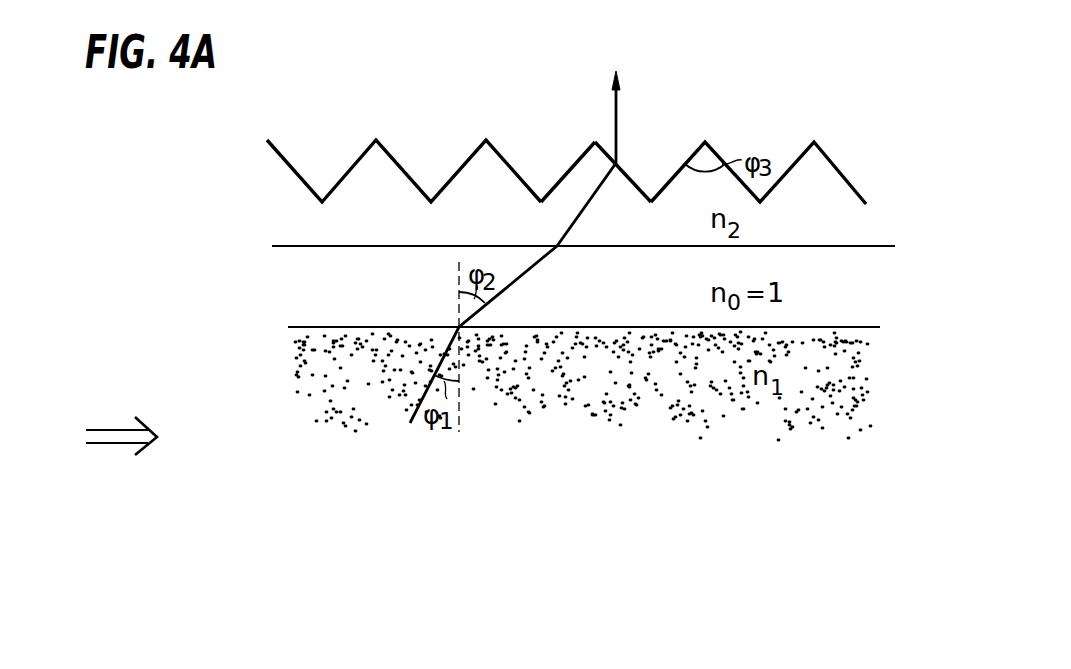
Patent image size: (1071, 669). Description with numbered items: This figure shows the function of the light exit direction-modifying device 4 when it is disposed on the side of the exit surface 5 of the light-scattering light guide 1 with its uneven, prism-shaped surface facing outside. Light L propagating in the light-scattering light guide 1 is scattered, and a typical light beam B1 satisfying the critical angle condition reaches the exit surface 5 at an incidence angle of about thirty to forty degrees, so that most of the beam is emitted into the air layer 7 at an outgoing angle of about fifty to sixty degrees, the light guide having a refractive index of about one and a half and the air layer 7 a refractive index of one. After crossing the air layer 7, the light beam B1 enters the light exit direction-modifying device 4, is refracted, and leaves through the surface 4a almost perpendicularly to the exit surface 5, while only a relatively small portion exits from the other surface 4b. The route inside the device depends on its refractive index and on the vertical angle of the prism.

The light-scattering light guide 1 is at (273, 390).
The light exit direction-modifying device 4 is at (273, 213).
The surface of the light exit direction modifying device 4a is at (636, 182).
The other surface of the light exit direction modifying device 4b is at (565, 172).
The exit surface 5 is at (353, 325).
The air layer 7 is at (273, 303).
The light beam B1 is at (417, 407).
The light from light source L is at (110, 446).